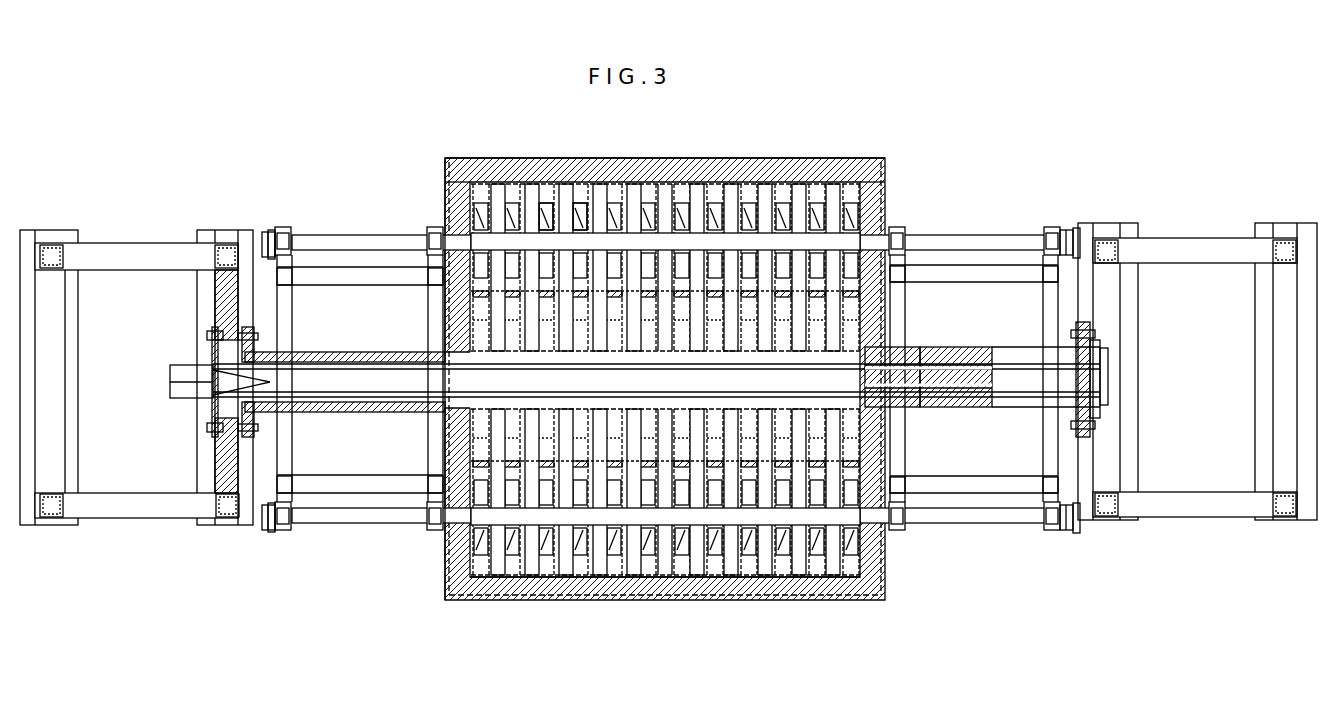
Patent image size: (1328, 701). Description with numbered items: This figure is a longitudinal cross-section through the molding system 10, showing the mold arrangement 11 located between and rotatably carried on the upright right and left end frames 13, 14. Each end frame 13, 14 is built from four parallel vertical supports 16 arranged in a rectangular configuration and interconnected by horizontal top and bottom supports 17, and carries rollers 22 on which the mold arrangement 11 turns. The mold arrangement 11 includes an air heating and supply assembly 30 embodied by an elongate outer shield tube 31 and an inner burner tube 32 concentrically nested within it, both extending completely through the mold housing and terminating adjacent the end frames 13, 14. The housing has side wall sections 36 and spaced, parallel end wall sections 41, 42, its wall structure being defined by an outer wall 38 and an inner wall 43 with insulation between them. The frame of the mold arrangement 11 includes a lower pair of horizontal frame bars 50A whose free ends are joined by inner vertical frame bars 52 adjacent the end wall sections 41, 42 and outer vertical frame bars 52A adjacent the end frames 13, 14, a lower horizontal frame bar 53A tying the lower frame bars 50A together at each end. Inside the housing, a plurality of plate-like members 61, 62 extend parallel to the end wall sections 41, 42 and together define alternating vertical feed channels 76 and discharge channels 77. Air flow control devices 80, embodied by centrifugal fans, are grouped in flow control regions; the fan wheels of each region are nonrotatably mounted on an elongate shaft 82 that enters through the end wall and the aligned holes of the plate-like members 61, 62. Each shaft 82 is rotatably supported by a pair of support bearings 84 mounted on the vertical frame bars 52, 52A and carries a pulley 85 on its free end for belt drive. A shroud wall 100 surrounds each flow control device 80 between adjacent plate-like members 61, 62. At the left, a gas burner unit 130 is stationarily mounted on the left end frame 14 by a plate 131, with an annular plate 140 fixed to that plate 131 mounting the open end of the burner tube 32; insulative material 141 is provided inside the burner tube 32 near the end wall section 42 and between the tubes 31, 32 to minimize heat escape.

The molding system 10 is at (878, 85).
The mold arrangement 11 is at (447, 125).
The right end frame 13 is at (1190, 215).
The left end frame 14 is at (135, 208).
The vertical supports 16 is at (65, 258).
The horizontal supports 17 is at (145, 262).
The rollers 22 is at (1098, 330).
The air heating and supply assembly 30 is at (168, 408).
The outer shield tube 31 is at (352, 354).
The inner burner tube 32 is at (390, 404).
The side wall sections 36 is at (745, 162).
The outer wall 38 is at (848, 600).
The end wall section 41 is at (885, 175).
The end wall section 42 is at (447, 180).
The inner wall 43 is at (815, 588).
The lower frame bars 50A is at (325, 268).
The inner vertical frame bars 52 is at (430, 240).
The outer vertical frame bars 52A is at (290, 238).
The lower horizontal frame bar 53A is at (292, 440).
The plate-like members 61 is at (546, 188).
The plate-like members 62 is at (608, 188).
The feed channels 76 is at (490, 190).
The discharge channels 77 is at (742, 188).
The air flow control devices 80 is at (850, 195).
The shaft 82 is at (340, 248).
The support bearings 84 is at (283, 228).
The pulley 85 is at (268, 235).
The shroud wall 100 is at (478, 322).
The gas burner unit 130 is at (168, 370).
The plate 131 is at (210, 410).
The annular plate 140 is at (210, 362).
The insulative material 141 is at (965, 410).